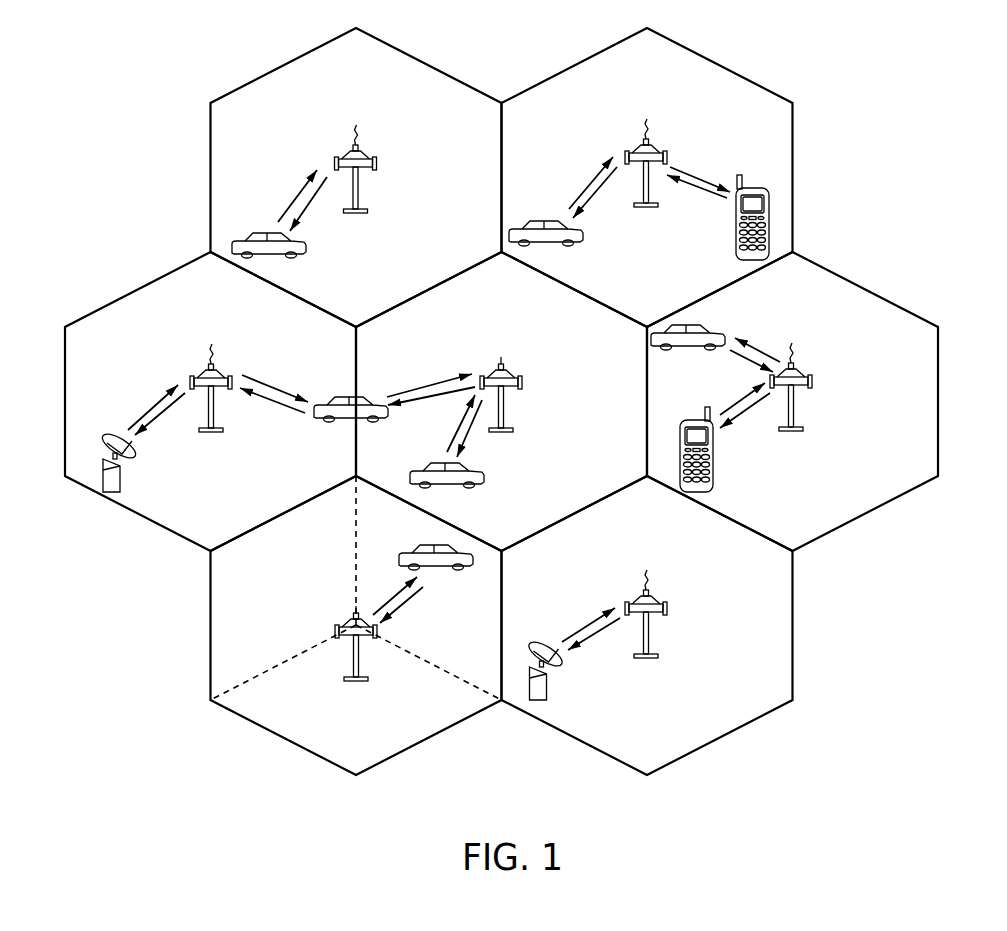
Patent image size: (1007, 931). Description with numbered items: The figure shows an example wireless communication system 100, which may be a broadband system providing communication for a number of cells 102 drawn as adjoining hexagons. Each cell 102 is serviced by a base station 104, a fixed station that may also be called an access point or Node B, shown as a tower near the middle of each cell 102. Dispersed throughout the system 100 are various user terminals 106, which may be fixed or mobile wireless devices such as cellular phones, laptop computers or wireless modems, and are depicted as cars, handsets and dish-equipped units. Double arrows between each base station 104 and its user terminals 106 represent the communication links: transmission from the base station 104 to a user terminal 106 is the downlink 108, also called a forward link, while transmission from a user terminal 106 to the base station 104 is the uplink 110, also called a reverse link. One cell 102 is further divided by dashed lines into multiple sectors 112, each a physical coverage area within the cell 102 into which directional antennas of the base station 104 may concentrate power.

The wireless communication system 100 is at (531, 398).
The cell 102 is at (292, 60).
The base station 104 is at (338, 625).
The user terminal 106 is at (306, 257).
The downlink 108 is at (305, 215).
The uplink 110 is at (300, 196).
The sector 112 is at (407, 735).